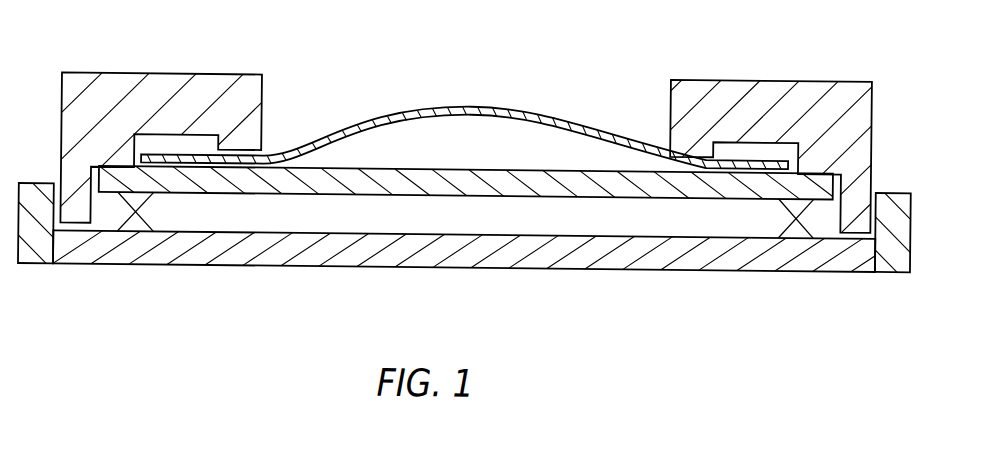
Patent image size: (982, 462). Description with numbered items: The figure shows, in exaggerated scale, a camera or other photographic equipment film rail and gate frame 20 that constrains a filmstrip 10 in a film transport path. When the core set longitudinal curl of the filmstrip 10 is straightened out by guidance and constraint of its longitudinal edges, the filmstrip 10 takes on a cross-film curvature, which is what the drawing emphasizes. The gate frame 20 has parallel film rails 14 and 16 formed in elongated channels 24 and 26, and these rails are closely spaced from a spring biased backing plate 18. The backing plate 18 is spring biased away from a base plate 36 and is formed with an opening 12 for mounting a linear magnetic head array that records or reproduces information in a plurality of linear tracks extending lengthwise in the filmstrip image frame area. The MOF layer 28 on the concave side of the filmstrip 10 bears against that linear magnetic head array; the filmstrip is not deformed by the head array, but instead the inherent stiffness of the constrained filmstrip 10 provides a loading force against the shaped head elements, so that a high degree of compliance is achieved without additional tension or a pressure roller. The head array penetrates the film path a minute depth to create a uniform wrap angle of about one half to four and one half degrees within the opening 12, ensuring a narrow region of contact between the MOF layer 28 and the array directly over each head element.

The filmstrip 10 is at (468, 100).
The opening 12 is at (343, 187).
The film rail 14 is at (243, 140).
The film rail 16 is at (695, 141).
The backing plate 18 is at (723, 183).
The film rail and gate frame 20 is at (166, 293).
The elongated channel 24 is at (88, 71).
The elongated channel 26 is at (815, 84).
The MOF layer 28 is at (572, 118).
The base plate 36 is at (523, 258).